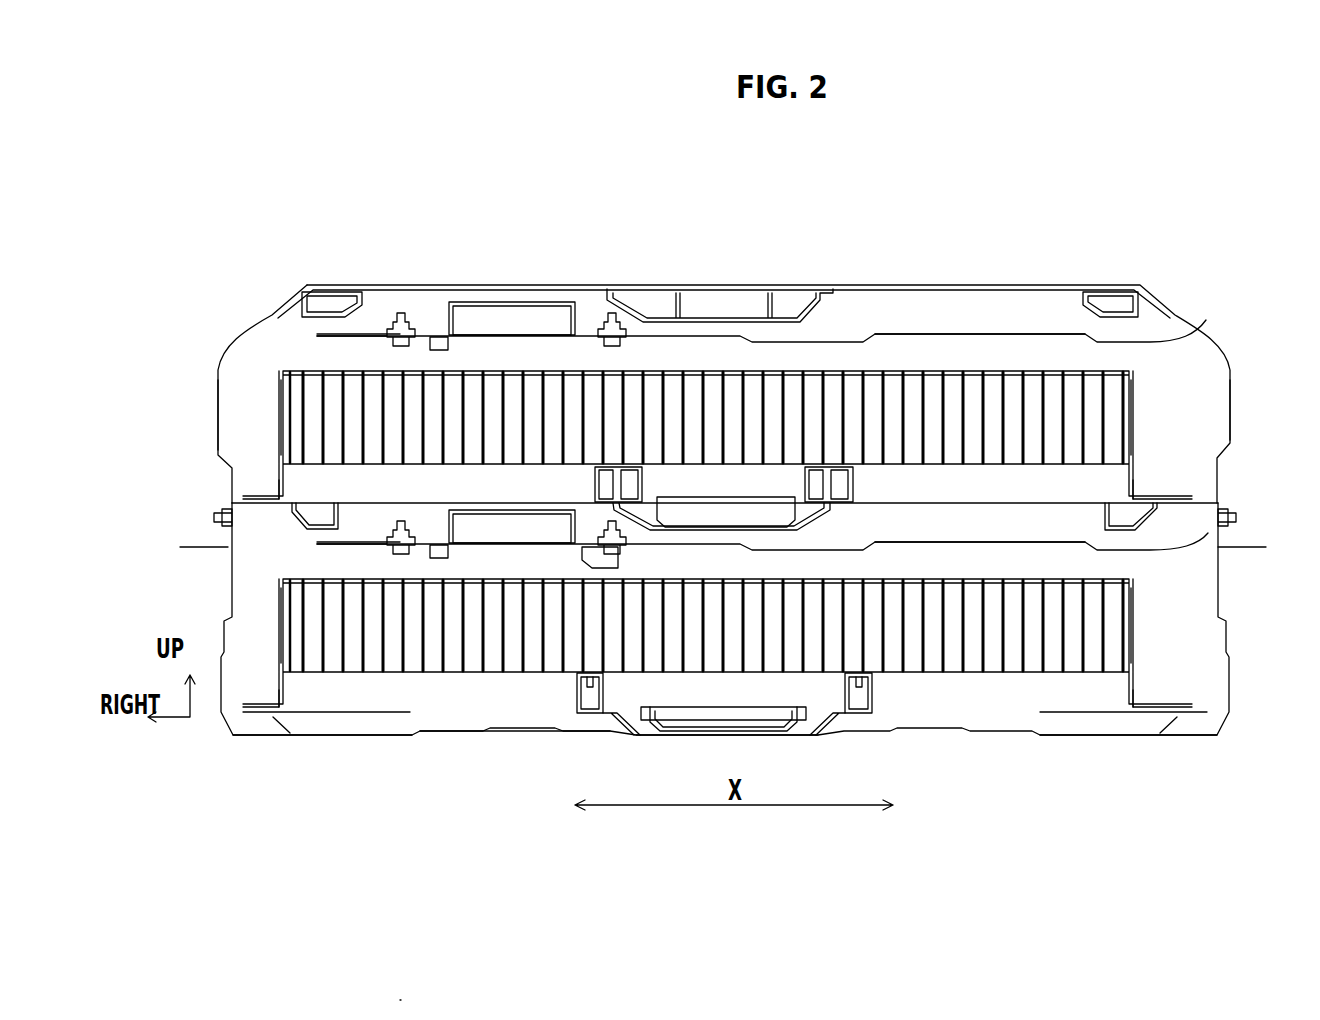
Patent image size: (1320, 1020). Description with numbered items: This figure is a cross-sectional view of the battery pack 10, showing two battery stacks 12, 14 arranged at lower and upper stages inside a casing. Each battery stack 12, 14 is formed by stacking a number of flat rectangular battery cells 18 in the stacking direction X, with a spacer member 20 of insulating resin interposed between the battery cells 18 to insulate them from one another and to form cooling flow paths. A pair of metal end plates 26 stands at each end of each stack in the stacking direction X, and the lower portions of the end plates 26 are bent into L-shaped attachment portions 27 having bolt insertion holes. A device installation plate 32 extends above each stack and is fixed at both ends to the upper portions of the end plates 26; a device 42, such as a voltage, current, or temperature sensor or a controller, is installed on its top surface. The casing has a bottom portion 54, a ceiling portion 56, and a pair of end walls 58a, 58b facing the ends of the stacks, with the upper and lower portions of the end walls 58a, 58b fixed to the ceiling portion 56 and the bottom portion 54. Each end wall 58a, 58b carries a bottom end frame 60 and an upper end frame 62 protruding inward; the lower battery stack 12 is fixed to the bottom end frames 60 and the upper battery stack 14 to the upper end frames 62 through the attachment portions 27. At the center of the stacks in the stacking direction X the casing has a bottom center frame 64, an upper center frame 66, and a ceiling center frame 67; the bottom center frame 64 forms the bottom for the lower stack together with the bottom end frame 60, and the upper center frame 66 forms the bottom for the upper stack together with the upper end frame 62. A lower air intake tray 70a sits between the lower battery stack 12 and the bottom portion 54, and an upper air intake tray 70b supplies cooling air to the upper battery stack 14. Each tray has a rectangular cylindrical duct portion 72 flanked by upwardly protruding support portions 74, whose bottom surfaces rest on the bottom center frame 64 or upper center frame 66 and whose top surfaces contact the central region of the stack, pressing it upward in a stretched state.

The battery pack 10 is at (1051, 246).
The battery stack 12 is at (1114, 568).
The battery stack 14 is at (1119, 351).
The battery cell 18 is at (977, 458).
The spacer member 20 is at (975, 385).
The end plate 26 is at (273, 402).
The attachment portion 27 is at (256, 497).
The device installation plate 32 is at (835, 338).
The device 42 is at (464, 298).
The bottom portion 54 is at (524, 739).
The ceiling portion 56 is at (545, 300).
The end wall 58a is at (211, 420).
The end wall 58b is at (1239, 427).
The bottom end frame 60 is at (335, 736).
The upper end frame 62 is at (232, 537).
The bottom center frame 64 is at (828, 735).
The upper center frame 66 is at (823, 515).
The ceiling center frame 67 is at (723, 327).
The lower air intake tray 70a is at (883, 695).
The upper air intake tray 70b is at (863, 491).
The duct portion 72 is at (722, 498).
The support portion 74 is at (643, 483).